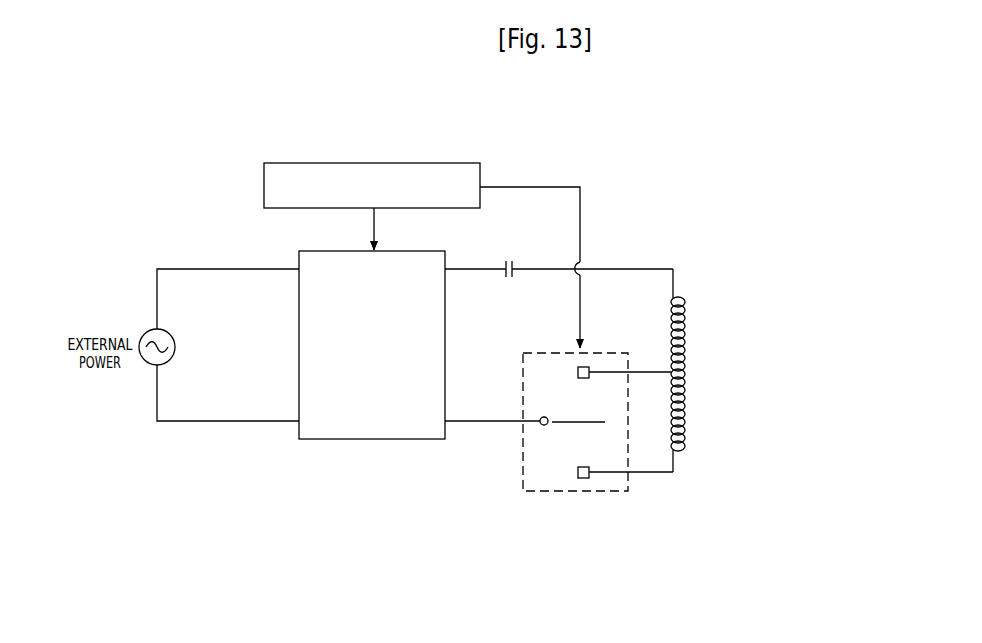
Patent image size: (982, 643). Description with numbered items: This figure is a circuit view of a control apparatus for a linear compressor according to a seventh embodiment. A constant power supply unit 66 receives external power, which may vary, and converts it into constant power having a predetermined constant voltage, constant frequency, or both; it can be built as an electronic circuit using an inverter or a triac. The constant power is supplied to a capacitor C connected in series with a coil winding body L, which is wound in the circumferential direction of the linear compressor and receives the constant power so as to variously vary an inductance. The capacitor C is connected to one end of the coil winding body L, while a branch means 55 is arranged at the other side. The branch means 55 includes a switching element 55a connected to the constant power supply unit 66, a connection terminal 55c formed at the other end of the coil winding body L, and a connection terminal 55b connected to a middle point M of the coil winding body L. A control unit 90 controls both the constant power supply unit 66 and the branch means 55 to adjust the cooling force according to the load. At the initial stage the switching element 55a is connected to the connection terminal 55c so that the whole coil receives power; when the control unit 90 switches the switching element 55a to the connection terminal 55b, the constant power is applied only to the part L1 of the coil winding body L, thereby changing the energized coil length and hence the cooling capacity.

The control unit 90 is at (430, 163).
The constant power supply unit 66 is at (380, 439).
The capacitor C is at (559, 259).
The branch means 55 is at (622, 491).
The switching element 55a is at (543, 426).
The connection terminal 55b is at (587, 366).
The connection terminal 55c is at (583, 478).
The middle point M is at (659, 385).
The coil winding body L is at (710, 370).
The part of the coil winding body L1 is at (686, 330).